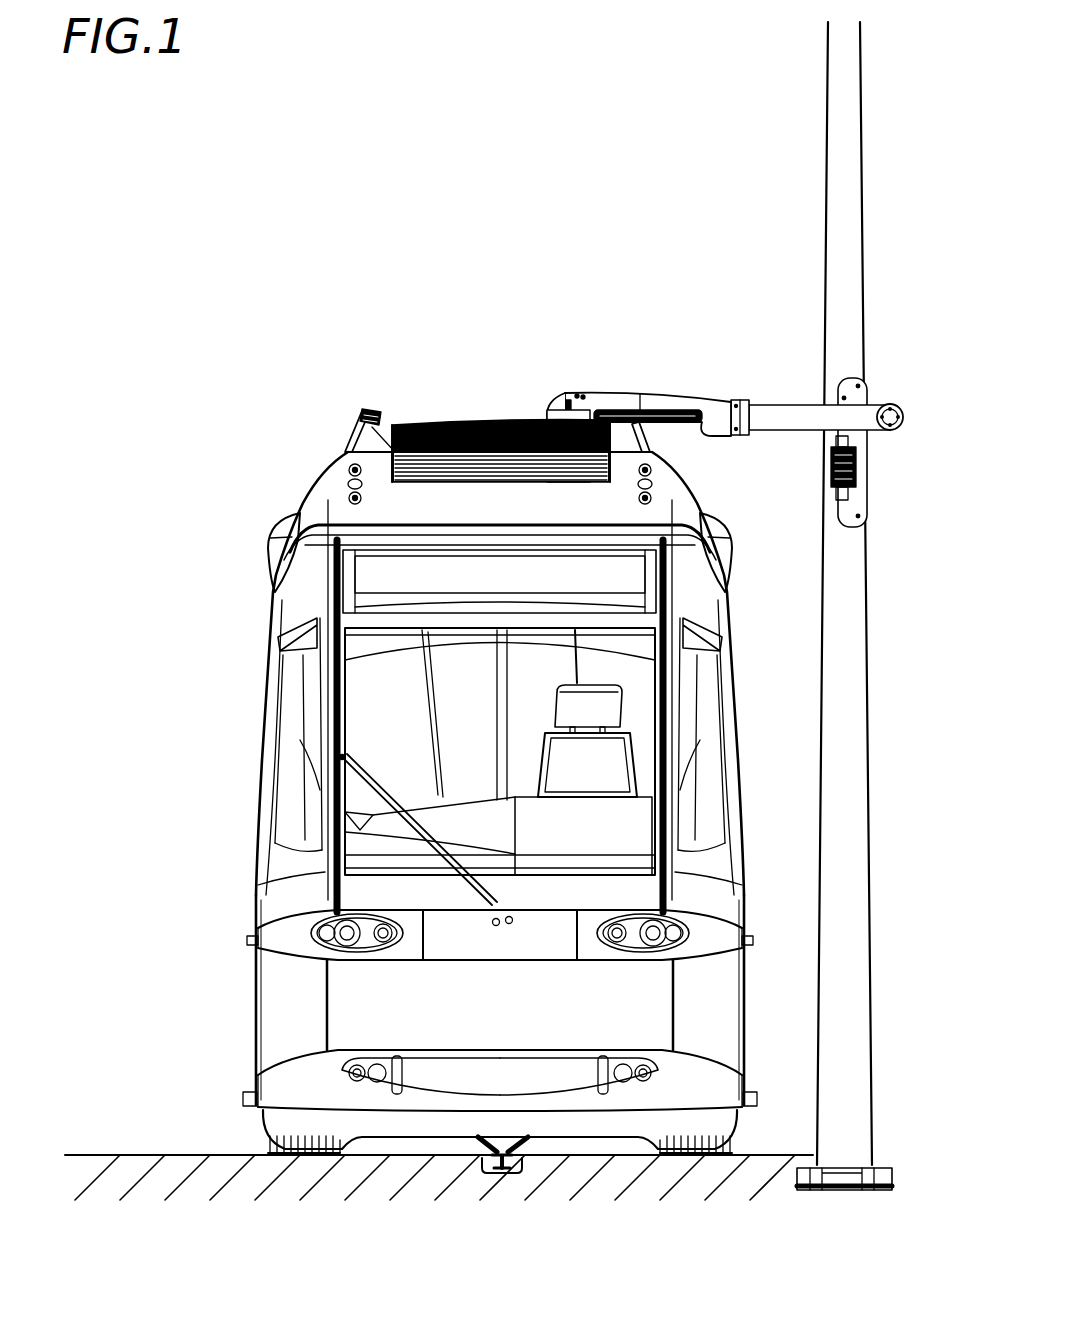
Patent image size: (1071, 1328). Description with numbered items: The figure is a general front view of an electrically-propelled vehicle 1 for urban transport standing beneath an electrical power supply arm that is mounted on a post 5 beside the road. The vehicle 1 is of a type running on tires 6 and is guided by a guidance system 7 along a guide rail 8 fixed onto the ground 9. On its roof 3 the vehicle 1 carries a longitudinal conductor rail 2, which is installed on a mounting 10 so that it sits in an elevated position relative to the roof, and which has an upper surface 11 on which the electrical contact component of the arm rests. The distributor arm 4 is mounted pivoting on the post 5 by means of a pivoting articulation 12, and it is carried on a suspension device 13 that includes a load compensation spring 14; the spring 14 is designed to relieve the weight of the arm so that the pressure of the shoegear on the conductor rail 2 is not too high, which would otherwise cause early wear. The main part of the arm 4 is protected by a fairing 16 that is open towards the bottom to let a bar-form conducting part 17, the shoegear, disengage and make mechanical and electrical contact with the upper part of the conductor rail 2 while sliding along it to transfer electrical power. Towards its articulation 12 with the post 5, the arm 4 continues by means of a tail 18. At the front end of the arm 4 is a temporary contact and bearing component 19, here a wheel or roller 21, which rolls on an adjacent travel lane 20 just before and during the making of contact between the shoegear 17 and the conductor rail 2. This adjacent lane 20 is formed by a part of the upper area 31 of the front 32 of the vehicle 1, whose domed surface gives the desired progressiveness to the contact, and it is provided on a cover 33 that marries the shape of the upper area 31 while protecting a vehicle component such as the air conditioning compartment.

The electrically-propelled vehicle 1 is at (251, 342).
The conductor rail 2 is at (669, 431).
The roof 3 is at (347, 395).
The distributor arm 4 is at (670, 348).
The post 5 is at (815, 203).
The tires 6 is at (253, 1145).
The guidance system 7 is at (534, 1146).
The guide rail 8 is at (495, 1172).
The ground 9 is at (95, 1153).
The mounting 10 is at (346, 441).
The upper surface 11 is at (367, 408).
The pivoting articulation 12 is at (889, 404).
The suspension device 13 is at (835, 464).
The load compensation spring 14 is at (858, 468).
The fairing 16 is at (649, 401).
The bar-form conducting part 17 is at (707, 434).
The tail 18 is at (800, 412).
The temporary contact and bearing component 19 is at (560, 398).
The adjacent travel lane 20 is at (570, 460).
The roller 21 is at (556, 415).
The upper area 31 is at (262, 493).
The front 32 is at (246, 880).
The cover 33 is at (385, 471).